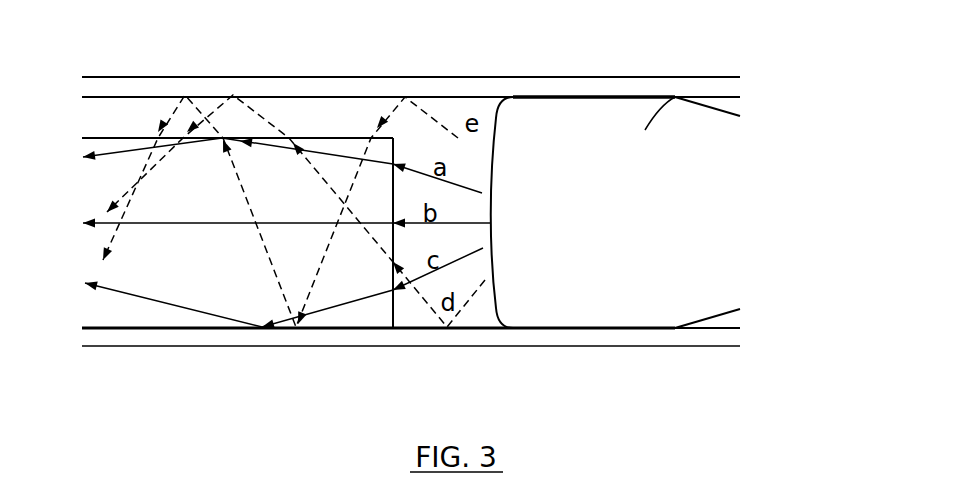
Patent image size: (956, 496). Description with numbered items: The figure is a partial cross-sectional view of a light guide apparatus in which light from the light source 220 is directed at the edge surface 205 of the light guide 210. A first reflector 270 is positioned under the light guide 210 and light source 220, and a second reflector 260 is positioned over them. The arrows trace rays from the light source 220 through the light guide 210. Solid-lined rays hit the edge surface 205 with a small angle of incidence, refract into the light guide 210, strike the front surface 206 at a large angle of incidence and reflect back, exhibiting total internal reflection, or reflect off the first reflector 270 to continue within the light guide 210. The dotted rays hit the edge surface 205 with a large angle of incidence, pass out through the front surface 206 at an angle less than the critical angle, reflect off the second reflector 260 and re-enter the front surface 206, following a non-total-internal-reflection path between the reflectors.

The edge surface 205 is at (400, 328).
The front surface 206 is at (322, 138).
The light guide 210 is at (125, 308).
The light source 220 is at (675, 97).
The second reflector 260 is at (587, 87).
The first reflector 270 is at (727, 338).